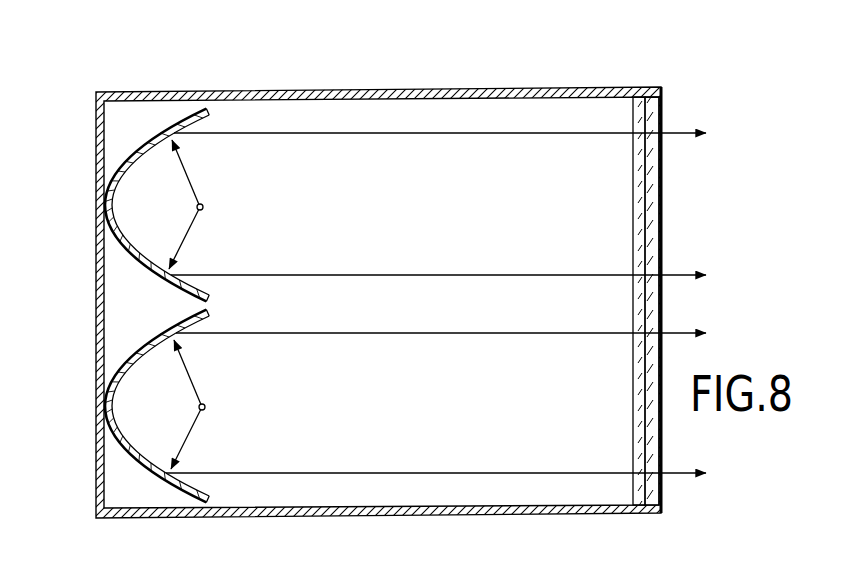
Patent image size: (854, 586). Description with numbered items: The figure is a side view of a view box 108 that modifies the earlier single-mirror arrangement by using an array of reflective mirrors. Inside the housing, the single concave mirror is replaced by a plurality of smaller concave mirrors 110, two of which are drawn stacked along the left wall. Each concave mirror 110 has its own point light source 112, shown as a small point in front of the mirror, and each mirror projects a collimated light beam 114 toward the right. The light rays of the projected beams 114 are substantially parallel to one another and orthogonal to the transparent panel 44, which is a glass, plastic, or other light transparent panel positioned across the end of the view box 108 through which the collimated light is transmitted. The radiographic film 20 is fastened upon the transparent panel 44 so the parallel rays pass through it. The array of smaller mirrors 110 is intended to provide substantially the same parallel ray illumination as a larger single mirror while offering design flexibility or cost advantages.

The view box 108 is at (641, 66).
The transparent panel 44 is at (637, 108).
The radiographic film 20 is at (655, 202).
The collimated light beam 114 is at (443, 132).
The concave mirror 110 is at (148, 144).
The point light source 112 is at (207, 205).